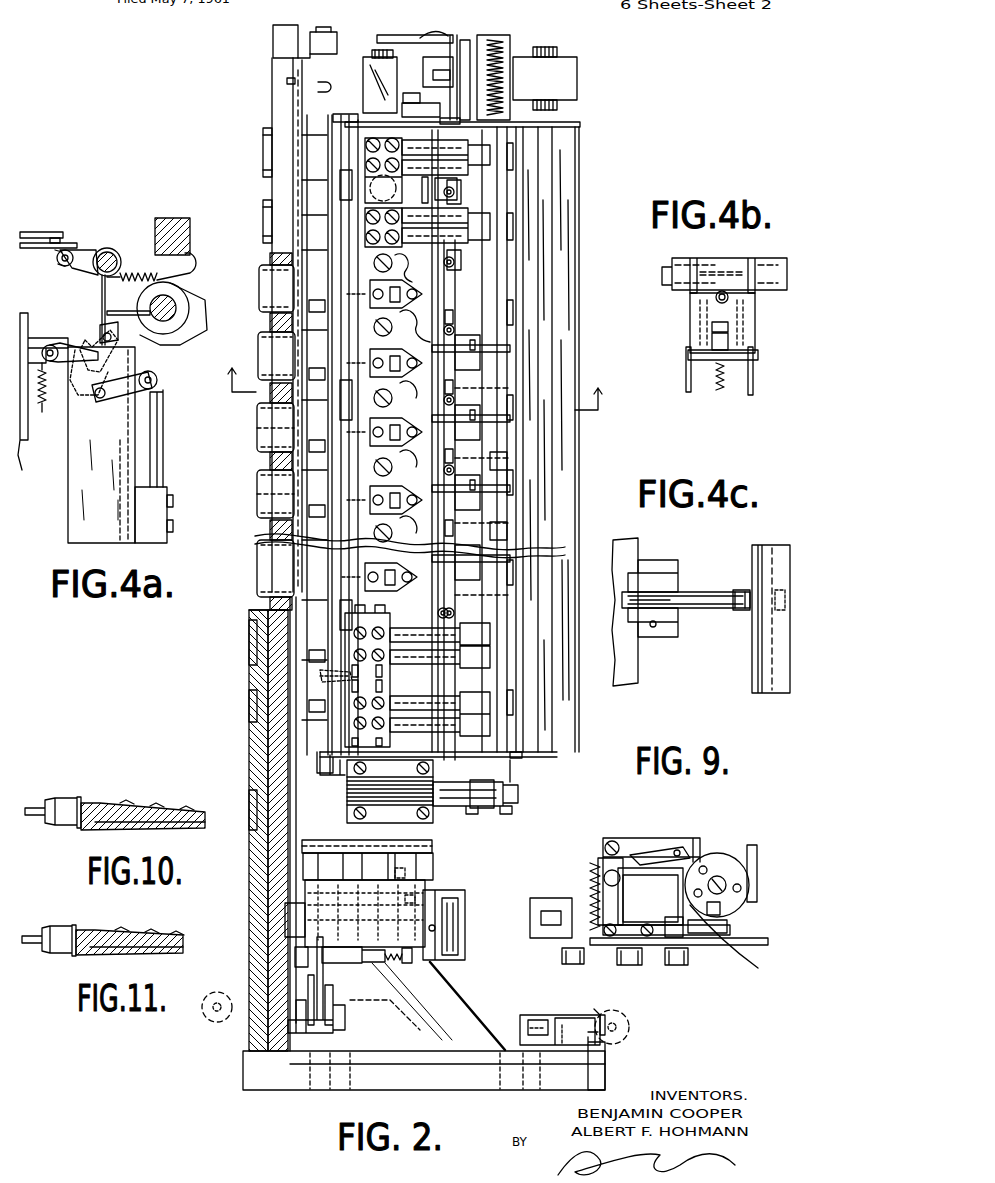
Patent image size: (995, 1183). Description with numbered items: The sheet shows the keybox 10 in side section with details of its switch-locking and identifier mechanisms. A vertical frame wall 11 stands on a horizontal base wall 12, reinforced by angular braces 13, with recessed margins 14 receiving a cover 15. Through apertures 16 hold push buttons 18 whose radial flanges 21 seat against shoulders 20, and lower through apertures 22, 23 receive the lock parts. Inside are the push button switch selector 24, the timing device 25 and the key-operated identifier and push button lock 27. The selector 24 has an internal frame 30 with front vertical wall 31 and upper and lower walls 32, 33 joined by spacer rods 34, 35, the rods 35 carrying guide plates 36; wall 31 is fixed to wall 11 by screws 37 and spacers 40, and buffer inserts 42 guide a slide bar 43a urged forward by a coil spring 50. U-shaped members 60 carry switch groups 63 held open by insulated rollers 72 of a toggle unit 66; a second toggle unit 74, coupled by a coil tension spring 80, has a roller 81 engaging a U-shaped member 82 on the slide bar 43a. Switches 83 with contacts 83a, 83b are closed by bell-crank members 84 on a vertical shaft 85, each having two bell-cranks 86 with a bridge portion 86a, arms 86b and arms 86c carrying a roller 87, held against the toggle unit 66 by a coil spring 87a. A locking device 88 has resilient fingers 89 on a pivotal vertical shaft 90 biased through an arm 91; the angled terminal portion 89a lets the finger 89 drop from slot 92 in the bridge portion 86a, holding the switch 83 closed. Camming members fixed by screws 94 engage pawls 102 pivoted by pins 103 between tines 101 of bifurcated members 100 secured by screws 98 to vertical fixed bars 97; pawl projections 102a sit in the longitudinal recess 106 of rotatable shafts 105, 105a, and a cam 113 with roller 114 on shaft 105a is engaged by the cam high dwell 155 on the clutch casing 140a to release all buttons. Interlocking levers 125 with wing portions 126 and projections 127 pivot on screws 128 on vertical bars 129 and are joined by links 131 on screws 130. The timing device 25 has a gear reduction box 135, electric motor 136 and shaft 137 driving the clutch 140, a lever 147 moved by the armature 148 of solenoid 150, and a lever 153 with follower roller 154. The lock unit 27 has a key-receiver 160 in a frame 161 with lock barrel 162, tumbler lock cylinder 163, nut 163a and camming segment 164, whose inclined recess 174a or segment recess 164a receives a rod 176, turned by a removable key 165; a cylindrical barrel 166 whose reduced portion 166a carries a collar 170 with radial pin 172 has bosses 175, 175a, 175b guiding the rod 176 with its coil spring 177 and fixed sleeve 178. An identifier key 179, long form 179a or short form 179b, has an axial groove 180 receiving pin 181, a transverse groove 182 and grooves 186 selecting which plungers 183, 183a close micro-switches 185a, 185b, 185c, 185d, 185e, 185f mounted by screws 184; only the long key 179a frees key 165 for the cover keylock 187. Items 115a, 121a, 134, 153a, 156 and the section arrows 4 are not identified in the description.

In FIG. 2, the keybox 10 is at (258, 559).
In FIG. 2, the vertical frame wall 11 is at (252, 760).
In FIG. 2, the horizontal base wall 12 is at (588, 1088).
In FIG. 2, the angular braces 13 is at (463, 1010).
In FIG. 2, the recessed margins 14 is at (275, 1053).
In FIG. 2, the cover 15 is at (518, 1025).
In FIG. 2, the through apertures 16 is at (258, 474).
In FIG. 2, the push buttons 18 is at (257, 209).
In FIG. 2, the shoulder 20 is at (260, 402).
In FIG. 2, the radial flanges 21 is at (270, 328).
In FIG. 2, the through aperture 22 is at (292, 935).
In FIG. 2, the through aperture 23 is at (245, 1022).
In FIG. 2, the push button switch selector 24 is at (590, 322).
In FIG. 2, the timing device 25 is at (571, 46).
In FIG. 9, the timing device 25 is at (768, 827).
In FIG. 2, the key-operated identifier and push button lock 27 is at (492, 863).
In FIG. 2, the internal frame 30 is at (580, 123).
In FIG. 2, the front vertical wall 31 is at (298, 110).
In FIG. 2, the horizontal upper wall 32 is at (558, 128).
In FIG. 2, the horizontal lower wall 33 is at (558, 755).
In FIG. 2, the vertical spacer rods 34 is at (545, 600).
In FIG. 4a, the vertical spacer rods 34 is at (182, 218).
In FIG. 2, the vertical spacer rods 35 is at (528, 490).
In FIG. 2, the guide plates 36 is at (516, 757).
In FIG. 2, the screws 37 is at (287, 81).
In FIG. 2, the spacers 40 is at (326, 88).
In FIG. 2, the buffer inserts 42 is at (322, 678).
In FIG. 4a, the push button slide bar 43a is at (20, 445).
In FIG. 4a, the coil spring 50 is at (44, 404).
In FIG. 4a, the U-shaped members 60 is at (117, 490).
In FIG. 4a, the switch groups 63 is at (168, 454).
In FIG. 4a, the toggle unit 66 is at (128, 383).
In FIG. 4b, the toggle unit 66 is at (761, 383).
In FIG. 4a, the insulated rollers 72 is at (158, 380).
In FIG. 4a, the toggle unit 74 is at (78, 355).
In FIG. 4a, the coil tension spring 80 is at (90, 390).
In FIG. 4b, the coil tension spring 80 is at (722, 388).
In FIG. 4a, the roller 81 is at (62, 346).
In FIG. 4a, the U-shaped member 82 is at (44, 323).
In FIG. 4a, the switches 83 is at (37, 227).
In FIG. 4a, the contact 83a is at (50, 232).
In FIG. 4a, the contact 83b is at (30, 250).
In FIG. 4a, the bell-crank members 84 is at (82, 250).
In FIG. 4b, the bell-crank members 84 is at (759, 331).
In FIG. 4a, the vertical shaft 85 is at (108, 248).
In FIG. 4b, the vertical shaft 85 is at (668, 270).
In FIG. 4b, the bell-cranks 86 is at (692, 325).
In FIG. 4a, the transverse bridge portion 86a is at (98, 300).
In FIG. 4b, the transverse bridge portion 86a is at (732, 312).
In FIG. 4a, the arms 86b is at (100, 285).
In FIG. 4a, the arms 86c is at (80, 270).
In FIG. 4a, the roller 87 is at (58, 264).
In FIG. 4a, the coil spring 87a is at (135, 267).
In FIG. 4b, the coil spring 87a is at (726, 290).
In FIG. 4a, the locking device 88 is at (170, 273).
In FIG. 4a, the resilient fingers 89 is at (128, 358).
In FIG. 4a, the terminal portion 89a is at (130, 311).
In FIG. 4a, the pivotal vertical shaft 90 is at (185, 308).
In FIG. 4a, the arm 91 is at (188, 327).
In FIG. 4a, the slot 92 is at (105, 333).
In FIG. 4b, the slot 92 is at (712, 345).
In FIG. 2, the screws 94 is at (372, 283).
In FIG. 4c, the vertical fixed bars 97 is at (638, 548).
In FIG. 4c, the screws 98 is at (682, 590).
In FIG. 4c, the bifurcated members 100 is at (672, 634).
In FIG. 4c, the tines 101 is at (673, 580).
In FIG. 4c, the pawl 102 is at (698, 608).
In FIG. 4c, the projections 102a is at (746, 620).
In FIG. 4c, the pins 103 is at (652, 573).
In FIG. 9, the vertical rotatable shaft 105 is at (628, 963).
In FIG. 2, the vertical rotatable shaft 105a is at (442, 120).
In FIG. 4c, the vertical rotatable shaft 105a is at (775, 668).
In FIG. 9, the vertical rotatable shaft 105a is at (684, 965).
In FIG. 4c, the longitudinal recess 106 is at (760, 560).
In FIG. 2, the cam 113 is at (418, 110).
In FIG. 9, the cam 113 is at (690, 935).
In FIG. 2, the roller 114 is at (414, 90).
In FIG. 9, the roller 114 is at (722, 910).
In FIG. 9, the terminal 115a is at (584, 956).
In FIG. 9, the switch 121a is at (558, 889).
In FIG. 2, the levers 125 is at (385, 450).
In FIG. 2, the wing portions 126 is at (396, 263).
In FIG. 2, the laterally extending projection 127 is at (450, 324).
In FIG. 2, the screws 128 is at (350, 328).
In FIG. 2, the spaced vertical bars 129 is at (352, 410).
In FIG. 2, the screws 130 is at (449, 614).
In FIG. 2, the link 131 is at (456, 274).
In FIG. 2, the clip 134 is at (512, 494).
In FIG. 2, the gear reduction box 135 is at (538, 69).
In FIG. 9, the gear reduction box 135 is at (640, 840).
In FIG. 2, the electric motor 136 is at (560, 78).
In FIG. 2, the shaft 137 is at (458, 80).
In FIG. 2, the clutch 140 is at (423, 64).
In FIG. 2, the clutch casing 140a is at (438, 70).
In FIG. 9, the clutch casing 140a is at (735, 877).
In FIG. 2, the lever 147 is at (425, 38).
In FIG. 2, the armature 148 is at (378, 38).
In FIG. 9, the armature 148 is at (615, 865).
In FIG. 2, the solenoid 150 is at (380, 85).
In FIG. 9, the solenoid 150 is at (650, 896).
In FIG. 9, the lever 153 is at (670, 848).
In FIG. 9, the lever arm 153a is at (730, 928).
In FIG. 9, the follower roller 154 is at (722, 853).
In FIG. 9, the cam high dwell 155 is at (622, 842).
In FIG. 9, the lead 156 is at (731, 939).
In FIG. 2, the key-receiver 160 is at (405, 955).
In FIG. 2, the frame 161 is at (293, 1032).
In FIG. 2, the fixed cylindrical lock barrel 162 is at (330, 1018).
In FIG. 2, the tumbler lock cylinder 163 is at (395, 1015).
In FIG. 2, the nut 163a is at (348, 1018).
In FIG. 2, the camming segment 164 is at (318, 985).
In FIG. 2, the segment recess 164a is at (348, 908).
In FIG. 2, the removable key 165 is at (205, 1017).
In FIG. 2, the fixed cylindrical barrel 166 is at (466, 952).
In FIG. 2, the reduced diametrical portion 166a is at (436, 891).
In FIG. 2, the collar 170 is at (458, 912).
In FIG. 2, the radial pin 172 is at (436, 928).
In FIG. 2, the inclined recess 174a is at (372, 56).
In FIG. 2, the raised boss 175 is at (420, 962).
In FIG. 2, the raised boss 175a is at (322, 965).
In FIG. 2, the raised boss 175b is at (300, 957).
In FIG. 2, the rod 176 is at (385, 957).
In FIG. 2, the coil spring 177 is at (378, 966).
In FIG. 2, the fixed sleeve 178 is at (396, 975).
In FIG. 10, the identifier key 179 is at (148, 782).
In FIG. 11, the identifier key 179 is at (146, 925).
In FIG. 10, the long form key 179a is at (94, 800).
In FIG. 11, the short form key 179b is at (98, 915).
In FIG. 10, the peripheral axial groove 180 is at (165, 828).
In FIG. 11, the peripheral axial groove 180 is at (160, 953).
In FIG. 2, the pin 181 is at (330, 910).
In FIG. 10, the transverse groove 182 is at (106, 825).
In FIG. 11, the transverse groove 182 is at (102, 953).
In FIG. 2, the plungers 183 is at (370, 882).
In FIG. 2, the plunger 183a is at (410, 905).
In FIG. 2, the screws 184 is at (432, 855).
In FIG. 2, the micro-switch 185a is at (420, 850).
In FIG. 2, the micro-switch 185b is at (400, 852).
In FIG. 2, the micro-switch 185c is at (380, 835).
In FIG. 2, the micro-switch 185d is at (335, 830).
In FIG. 2, the micro-switch 185e is at (352, 850).
In FIG. 2, the micro-switch 185f is at (358, 812).
In FIG. 10, the transverse grooves 186 is at (175, 808).
In FIG. 11, the transverse grooves 186 is at (178, 930).
In FIG. 2, the cover keylock 187 is at (598, 1013).
In FIG. 2, the section line 4- 4 is at (410, 379).